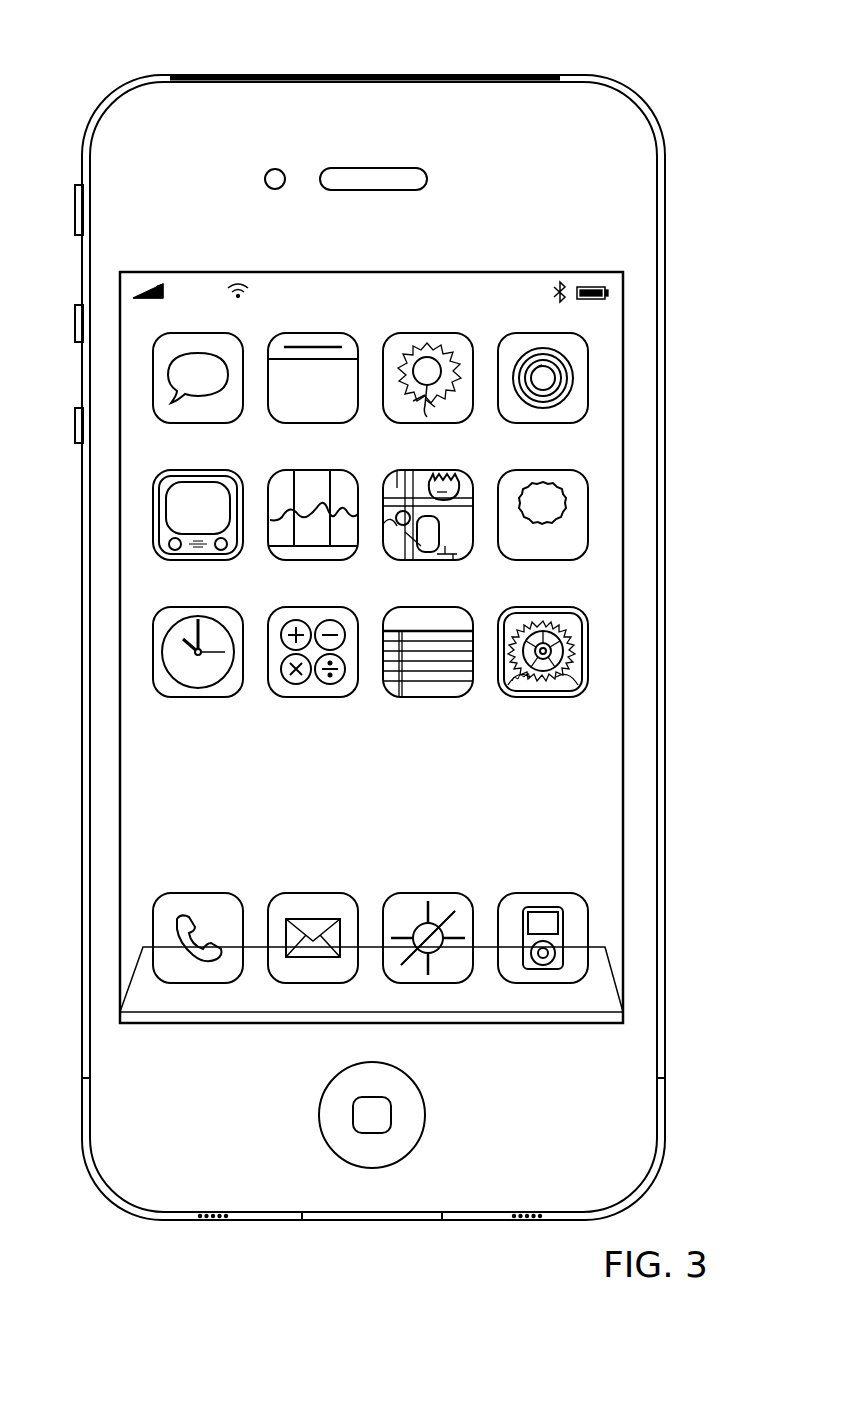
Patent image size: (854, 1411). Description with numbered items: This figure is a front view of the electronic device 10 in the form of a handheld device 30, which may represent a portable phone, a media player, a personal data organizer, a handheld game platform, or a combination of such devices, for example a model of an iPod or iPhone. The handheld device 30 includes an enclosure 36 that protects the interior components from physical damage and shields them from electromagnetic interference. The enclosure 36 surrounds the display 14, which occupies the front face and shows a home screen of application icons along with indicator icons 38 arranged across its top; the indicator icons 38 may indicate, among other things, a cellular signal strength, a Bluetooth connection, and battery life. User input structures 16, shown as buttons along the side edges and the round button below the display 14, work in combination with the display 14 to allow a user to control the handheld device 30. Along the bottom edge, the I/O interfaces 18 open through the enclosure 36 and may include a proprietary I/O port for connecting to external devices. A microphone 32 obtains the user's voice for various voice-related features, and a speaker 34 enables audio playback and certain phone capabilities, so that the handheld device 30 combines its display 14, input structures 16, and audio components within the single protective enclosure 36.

The electronic device 10 is at (172, 41).
The display 14 is at (623, 616).
The user input structures 16 is at (548, 76).
The I/O interfaces 18 is at (360, 1222).
The handheld device 30 is at (686, 134).
The microphone 32 is at (210, 1222).
The speaker 34 is at (375, 168).
The enclosure 36 is at (666, 258).
The indicator icons 38 is at (160, 287).